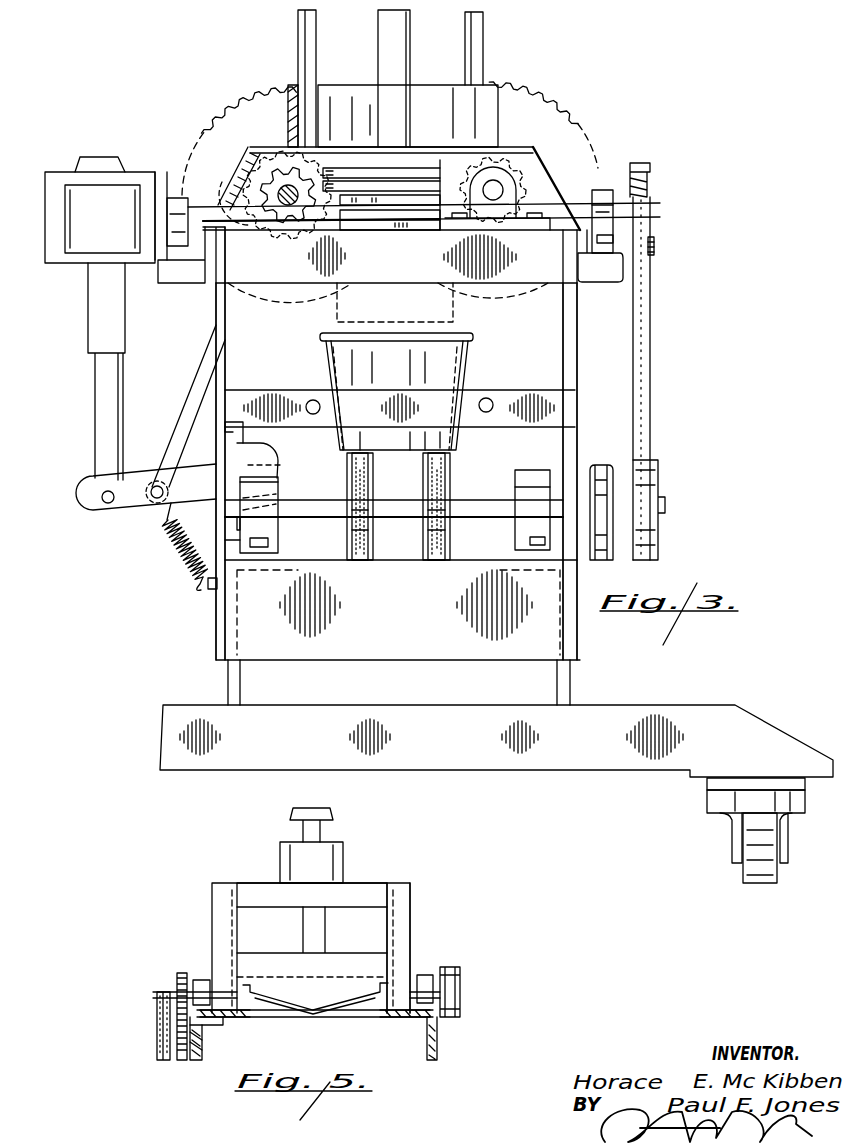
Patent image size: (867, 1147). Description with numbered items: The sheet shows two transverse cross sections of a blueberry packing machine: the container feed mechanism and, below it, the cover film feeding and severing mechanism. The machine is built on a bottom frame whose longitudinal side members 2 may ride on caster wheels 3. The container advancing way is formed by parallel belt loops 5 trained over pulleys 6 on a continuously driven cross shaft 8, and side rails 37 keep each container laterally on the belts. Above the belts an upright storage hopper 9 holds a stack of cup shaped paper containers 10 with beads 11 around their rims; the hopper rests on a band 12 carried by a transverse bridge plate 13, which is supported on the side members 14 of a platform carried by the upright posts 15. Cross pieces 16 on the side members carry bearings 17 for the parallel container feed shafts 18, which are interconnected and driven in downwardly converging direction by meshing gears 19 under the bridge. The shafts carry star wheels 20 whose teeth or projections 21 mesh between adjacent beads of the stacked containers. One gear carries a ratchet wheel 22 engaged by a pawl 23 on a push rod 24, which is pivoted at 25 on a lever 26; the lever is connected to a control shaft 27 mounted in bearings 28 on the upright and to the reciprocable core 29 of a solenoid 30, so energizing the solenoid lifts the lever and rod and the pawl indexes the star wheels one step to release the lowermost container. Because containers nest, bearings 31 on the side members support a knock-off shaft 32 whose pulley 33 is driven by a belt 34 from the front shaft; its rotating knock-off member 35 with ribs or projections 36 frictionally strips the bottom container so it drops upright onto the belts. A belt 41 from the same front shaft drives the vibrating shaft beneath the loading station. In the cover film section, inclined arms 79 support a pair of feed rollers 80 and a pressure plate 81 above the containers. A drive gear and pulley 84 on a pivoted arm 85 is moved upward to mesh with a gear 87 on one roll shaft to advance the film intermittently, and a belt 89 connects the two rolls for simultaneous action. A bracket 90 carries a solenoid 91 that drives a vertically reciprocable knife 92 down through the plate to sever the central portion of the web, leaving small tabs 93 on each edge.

In FIG. 3, the longitudinal side members 2 is at (235, 688).
In FIG. 3, the caster wheels 3 is at (768, 875).
In FIG. 3, the belt loops 5 is at (425, 554).
In FIG. 3, the pulleys 6 is at (423, 537).
In FIG. 3, the cross shaft 8 is at (463, 509).
In FIG. 3, the storage hopper 9 is at (473, 57).
In FIG. 3, the containers 10 is at (453, 372).
In FIG. 3, the beads 11 is at (473, 337).
In FIG. 3, the band 12 is at (498, 120).
In FIG. 3, the bridge plate 13 is at (508, 193).
In FIG. 3, the side members 14 is at (175, 285).
In FIG. 3, the upright posts 15 is at (222, 360).
In FIG. 3, the cross pieces 16 is at (300, 274).
In FIG. 3, the bearings 17 is at (616, 200).
In FIG. 3, the container feed shafts 18 is at (286, 192).
In FIG. 3, the gears 19 is at (204, 128).
In FIG. 3, the star wheels 20 is at (266, 198).
In FIG. 3, the teeth or projections 21 is at (258, 175).
In FIG. 3, the ratchet wheel 22 is at (297, 238).
In FIG. 3, the pawl 23 is at (246, 205).
In FIG. 3, the push rod 24 is at (182, 415).
In FIG. 3, the pivot 25 is at (150, 505).
In FIG. 3, the lever 26 is at (107, 505).
In FIG. 3, the control shaft 27 is at (282, 463).
In FIG. 3, the bearings 28 is at (280, 481).
In FIG. 3, the reciprocable core 29 is at (103, 388).
In FIG. 3, the solenoid 30 is at (87, 237).
In FIG. 3, the bearings 31 is at (608, 234).
In FIG. 3, the knock-off shaft 32 is at (614, 207).
In FIG. 3, the pulley 33 is at (655, 243).
In FIG. 3, the belt 34 is at (651, 282).
In FIG. 3, the knock-off member 35 is at (370, 218).
In FIG. 3, the ribs or projections 36 is at (422, 226).
In FIG. 3, the side rails 37 is at (310, 401).
In FIG. 3, the belt 41 is at (600, 465).
In FIG. 5, the inclined arms 79 is at (202, 1047).
In FIG. 5, the feed rollers 80 is at (404, 973).
In FIG. 5, the pressure plate 81 is at (392, 1017).
In FIG. 5, the drive gear and pulley 84 is at (164, 1060).
In FIG. 5, the arm 85 is at (192, 1060).
In FIG. 5, the gear 87 is at (180, 983).
In FIG. 5, the belt 89 is at (461, 969).
In FIG. 5, the bracket 90 is at (255, 897).
In FIG. 5, the solenoid 91 is at (338, 862).
In FIG. 5, the knife 92 is at (343, 967).
In FIG. 5, the tabs 93 is at (246, 1004).